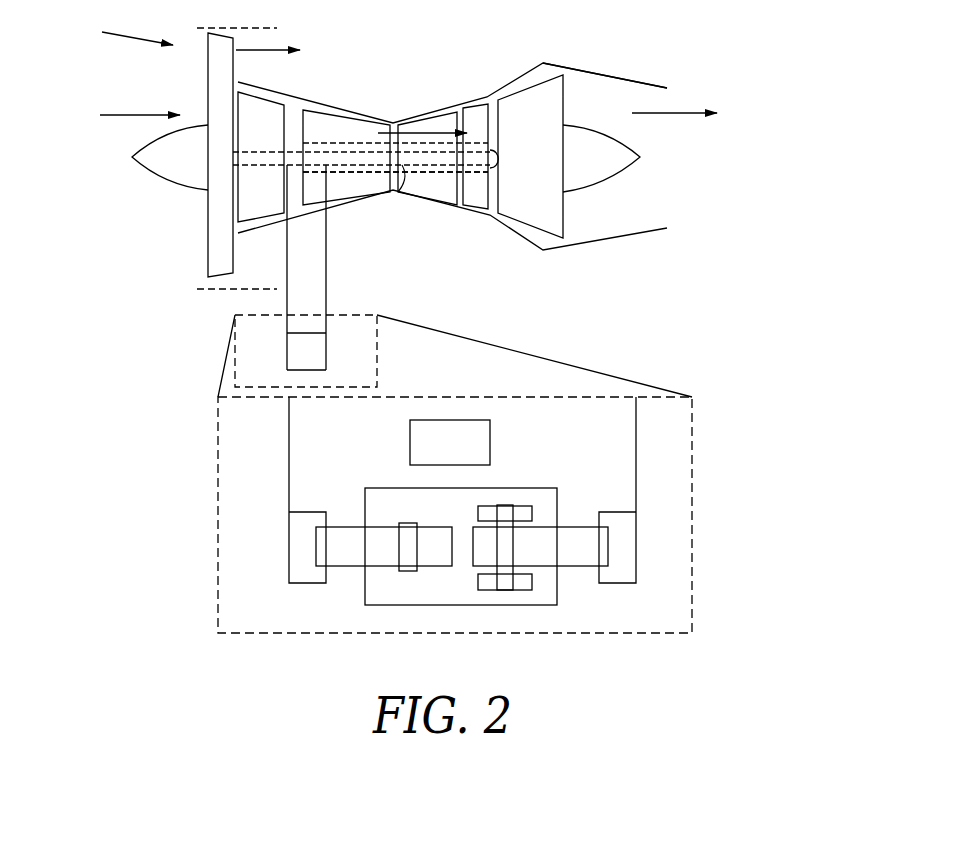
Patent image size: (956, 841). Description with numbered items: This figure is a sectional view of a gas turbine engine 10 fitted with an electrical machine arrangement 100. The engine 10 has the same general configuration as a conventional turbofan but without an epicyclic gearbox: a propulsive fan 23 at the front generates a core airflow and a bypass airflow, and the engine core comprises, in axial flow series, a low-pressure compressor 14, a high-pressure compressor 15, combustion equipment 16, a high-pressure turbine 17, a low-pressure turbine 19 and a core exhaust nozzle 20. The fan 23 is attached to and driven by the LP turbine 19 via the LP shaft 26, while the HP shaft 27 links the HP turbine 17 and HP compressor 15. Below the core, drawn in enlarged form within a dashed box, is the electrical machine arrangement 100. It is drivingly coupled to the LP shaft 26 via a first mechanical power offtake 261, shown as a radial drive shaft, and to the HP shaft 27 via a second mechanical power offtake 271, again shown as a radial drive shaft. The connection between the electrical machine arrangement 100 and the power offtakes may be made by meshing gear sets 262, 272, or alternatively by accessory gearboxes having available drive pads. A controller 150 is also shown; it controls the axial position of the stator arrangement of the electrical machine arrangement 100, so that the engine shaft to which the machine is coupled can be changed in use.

The gas turbine engine 10 is at (682, 32).
The low-pressure compressor 14 is at (247, 202).
The high-pressure compressor 15 is at (345, 130).
The combustion equipment 16 is at (445, 190).
The high-pressure turbine 17 is at (473, 117).
The low-pressure turbine 19 is at (530, 100).
The core exhaust nozzle 20 is at (603, 93).
The propulsive fan 23 is at (216, 70).
The LP shaft 26 is at (398, 192).
The HP shaft 27 is at (422, 172).
The electrical machine arrangement 100 is at (278, 352).
The controller 150 is at (464, 457).
The first mechanical power offtake 261 is at (287, 302).
The second mechanical power offtake 262 is at (289, 556).
The second mechanical power offtake 271 is at (326, 288).
The meshing gear set 272 is at (618, 583).